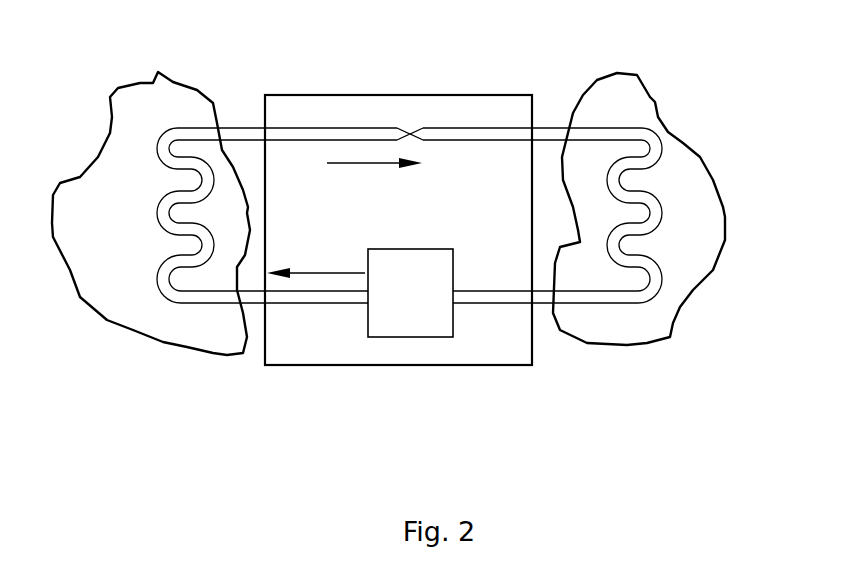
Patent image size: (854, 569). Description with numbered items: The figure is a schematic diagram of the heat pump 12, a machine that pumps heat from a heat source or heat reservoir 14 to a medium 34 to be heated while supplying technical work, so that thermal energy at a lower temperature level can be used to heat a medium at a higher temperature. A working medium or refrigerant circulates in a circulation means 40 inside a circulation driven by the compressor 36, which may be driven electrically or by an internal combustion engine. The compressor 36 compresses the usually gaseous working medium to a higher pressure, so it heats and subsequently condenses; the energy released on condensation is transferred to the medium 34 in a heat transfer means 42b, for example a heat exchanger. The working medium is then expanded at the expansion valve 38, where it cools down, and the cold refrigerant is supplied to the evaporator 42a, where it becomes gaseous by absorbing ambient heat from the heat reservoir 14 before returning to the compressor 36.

The heat pump 12 is at (300, 367).
The heat reservoir 14 is at (655, 99).
The medium to be heated 34 is at (177, 74).
The compressor 36 is at (453, 312).
The expansion valve 38 is at (410, 116).
The circulation means 40 is at (325, 273).
The evaporator 42a is at (668, 168).
The heat transfer means 42b is at (136, 143).